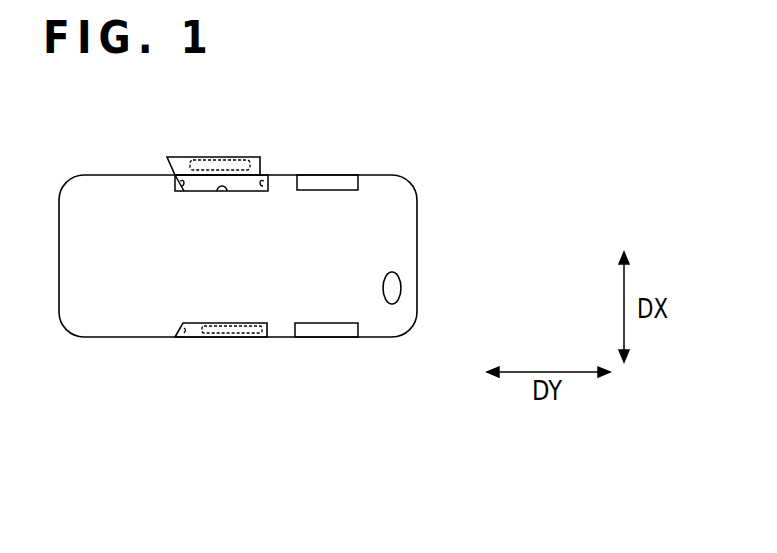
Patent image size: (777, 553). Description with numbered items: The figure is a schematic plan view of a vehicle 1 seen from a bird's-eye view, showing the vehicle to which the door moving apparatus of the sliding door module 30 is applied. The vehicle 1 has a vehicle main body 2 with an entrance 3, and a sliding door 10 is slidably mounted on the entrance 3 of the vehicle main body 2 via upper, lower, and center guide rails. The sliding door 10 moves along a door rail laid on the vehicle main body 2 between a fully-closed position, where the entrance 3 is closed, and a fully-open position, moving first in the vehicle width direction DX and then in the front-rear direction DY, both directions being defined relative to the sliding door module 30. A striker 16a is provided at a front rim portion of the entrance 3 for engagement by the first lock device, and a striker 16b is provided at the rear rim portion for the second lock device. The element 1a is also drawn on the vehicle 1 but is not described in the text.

The vehicle 1 is at (298, 251).
The opening 1a is at (401, 298).
The vehicle main body 2 is at (118, 340).
The entrance 3 is at (222, 193).
The sliding door 10 is at (183, 157).
The striker 16a is at (253, 193).
The striker 16b is at (188, 193).
The sliding door module 30 is at (222, 156).